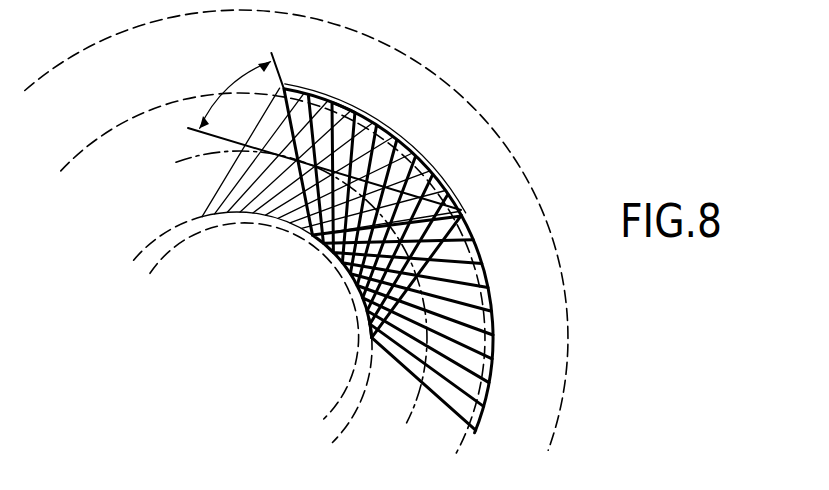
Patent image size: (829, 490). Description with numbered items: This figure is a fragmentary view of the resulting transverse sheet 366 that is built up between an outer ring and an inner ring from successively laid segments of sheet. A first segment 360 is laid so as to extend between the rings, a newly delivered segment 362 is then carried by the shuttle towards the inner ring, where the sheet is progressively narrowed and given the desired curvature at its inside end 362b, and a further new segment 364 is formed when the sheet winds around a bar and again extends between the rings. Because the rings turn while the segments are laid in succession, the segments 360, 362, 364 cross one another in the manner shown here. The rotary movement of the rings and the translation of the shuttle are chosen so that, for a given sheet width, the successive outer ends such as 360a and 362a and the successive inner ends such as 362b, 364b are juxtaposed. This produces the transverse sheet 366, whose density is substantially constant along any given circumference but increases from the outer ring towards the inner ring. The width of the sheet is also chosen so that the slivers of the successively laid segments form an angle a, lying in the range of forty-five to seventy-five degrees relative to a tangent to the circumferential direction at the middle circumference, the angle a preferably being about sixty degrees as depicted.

The segment of the sheet 360 is at (455, 275).
The outer end of sheet segment 360a is at (491, 377).
The newly delivered segment of sheet 362 is at (413, 178).
The outer end of sheet segment 362a is at (358, 112).
The inside end of sheet segment 362b is at (348, 300).
The new segment of sheet 364 is at (297, 88).
The inner end of sheet segment 364b is at (273, 220).
The transverse sheet 366 is at (453, 180).
The angle a is at (235, 94).